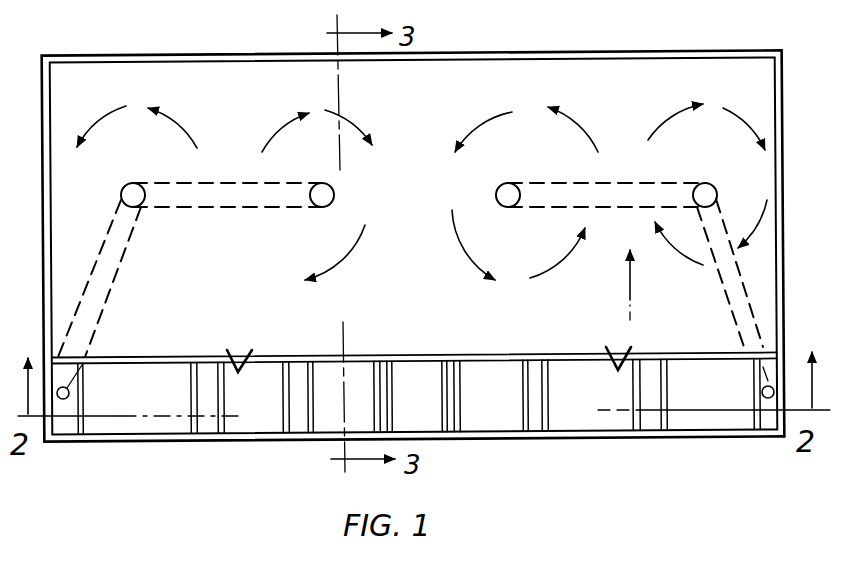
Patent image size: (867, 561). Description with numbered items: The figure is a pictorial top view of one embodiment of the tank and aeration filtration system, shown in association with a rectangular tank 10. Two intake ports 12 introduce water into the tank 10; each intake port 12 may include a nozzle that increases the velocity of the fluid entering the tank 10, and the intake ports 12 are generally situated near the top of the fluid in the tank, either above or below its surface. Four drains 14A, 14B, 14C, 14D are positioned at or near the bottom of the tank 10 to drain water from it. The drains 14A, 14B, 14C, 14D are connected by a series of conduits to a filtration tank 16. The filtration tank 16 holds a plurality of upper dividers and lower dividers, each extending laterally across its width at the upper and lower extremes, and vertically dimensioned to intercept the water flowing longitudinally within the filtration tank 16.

The tank 10 is at (214, 53).
The intake ports 12 is at (237, 358).
The drain 14A is at (143, 142).
The drain 14B is at (332, 142).
The drain 14C is at (507, 185).
The drain 14D is at (722, 148).
The filtration tank 16 is at (238, 443).